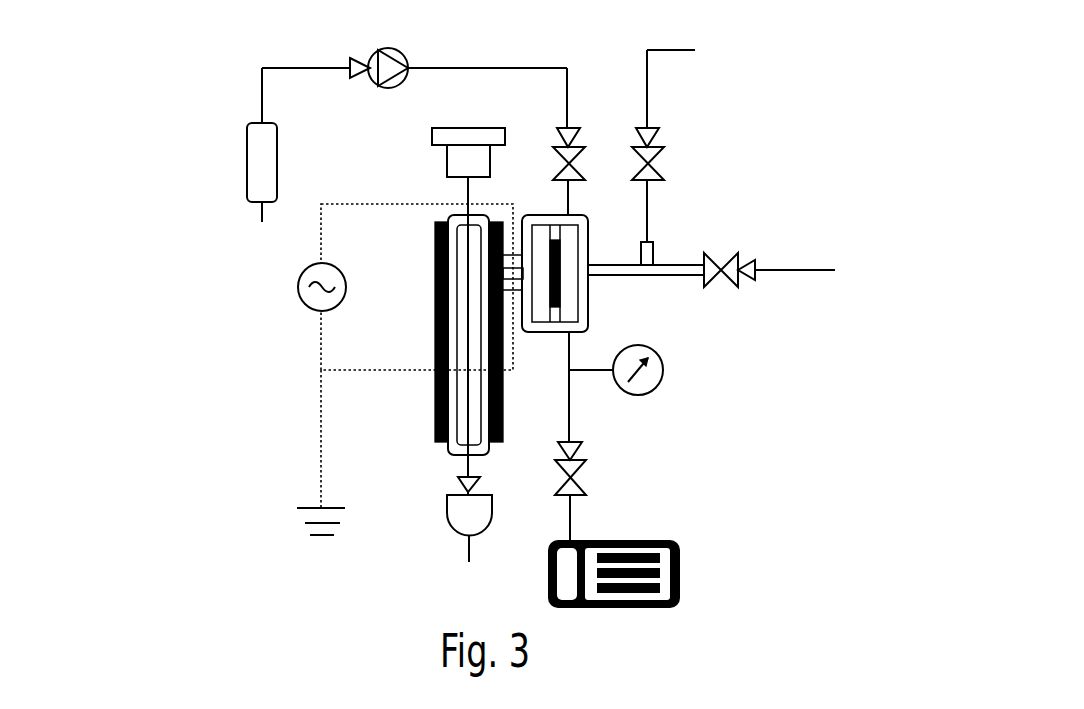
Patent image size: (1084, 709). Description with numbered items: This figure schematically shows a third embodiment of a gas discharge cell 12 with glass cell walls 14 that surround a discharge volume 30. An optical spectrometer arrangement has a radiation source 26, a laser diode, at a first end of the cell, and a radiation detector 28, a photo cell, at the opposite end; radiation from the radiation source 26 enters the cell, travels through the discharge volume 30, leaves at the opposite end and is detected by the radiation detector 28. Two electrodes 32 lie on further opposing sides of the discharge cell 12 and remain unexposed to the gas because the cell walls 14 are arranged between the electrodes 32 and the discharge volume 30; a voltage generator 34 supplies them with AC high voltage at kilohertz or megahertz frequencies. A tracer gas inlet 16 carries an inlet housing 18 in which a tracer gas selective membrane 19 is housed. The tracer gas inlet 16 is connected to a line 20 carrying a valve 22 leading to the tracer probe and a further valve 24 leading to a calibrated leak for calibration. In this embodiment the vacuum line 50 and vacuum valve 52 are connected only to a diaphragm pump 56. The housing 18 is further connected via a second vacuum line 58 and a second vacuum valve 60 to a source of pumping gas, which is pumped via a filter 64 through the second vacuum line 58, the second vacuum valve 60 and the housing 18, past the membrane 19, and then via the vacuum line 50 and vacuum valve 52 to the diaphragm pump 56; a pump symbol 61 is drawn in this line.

The gas discharge cell 12 is at (432, 468).
The cell walls 14 is at (485, 215).
The tracer gas inlet 16 is at (602, 298).
The inlet housing 18 is at (535, 333).
The tracer gas selective membrane 19 is at (562, 257).
The line 20 is at (652, 275).
The valve 22 is at (721, 270).
The further valve 24 is at (650, 163).
The radiation source 26 is at (447, 160).
The radiation detector 28 is at (468, 512).
The discharge volume 30 is at (465, 278).
The electrodes 32 is at (435, 330).
The voltage generator 34 is at (298, 302).
The vacuum line 50 is at (573, 412).
The vacuum valve 52 is at (577, 480).
The diaphragm pump 56 is at (648, 607).
The second vacuum line 58 is at (480, 67).
The second vacuum valve 60 is at (573, 163).
The pump 61 is at (377, 60).
The filter 64 is at (257, 137).